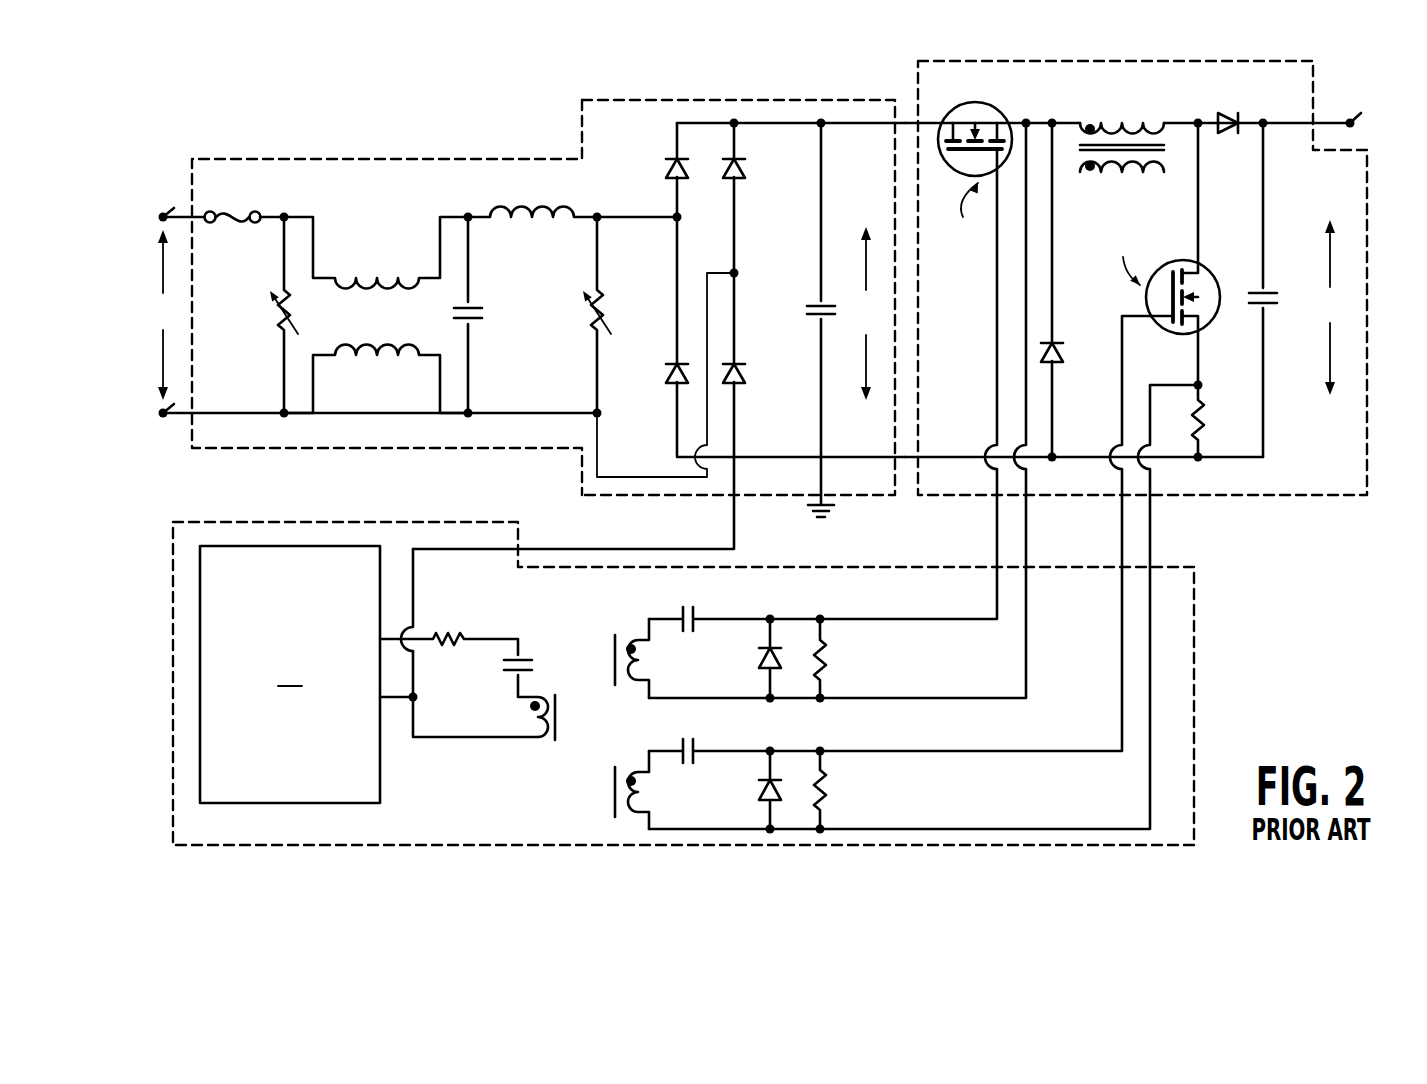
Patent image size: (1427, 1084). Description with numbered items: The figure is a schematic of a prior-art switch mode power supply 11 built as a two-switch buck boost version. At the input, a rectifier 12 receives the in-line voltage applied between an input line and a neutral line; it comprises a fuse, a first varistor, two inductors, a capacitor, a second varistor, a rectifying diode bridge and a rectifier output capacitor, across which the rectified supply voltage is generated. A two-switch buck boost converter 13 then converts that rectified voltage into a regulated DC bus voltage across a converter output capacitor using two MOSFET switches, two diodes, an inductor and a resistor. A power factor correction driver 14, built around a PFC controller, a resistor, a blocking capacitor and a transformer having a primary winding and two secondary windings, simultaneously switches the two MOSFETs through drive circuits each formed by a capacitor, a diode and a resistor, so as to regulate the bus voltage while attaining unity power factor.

The switch mode power supply 11 is at (545, 108).
The rectifier 12 is at (385, 159).
The two-switch buck boost converter 13 is at (1290, 498).
The power factor correction driver 14 is at (352, 522).